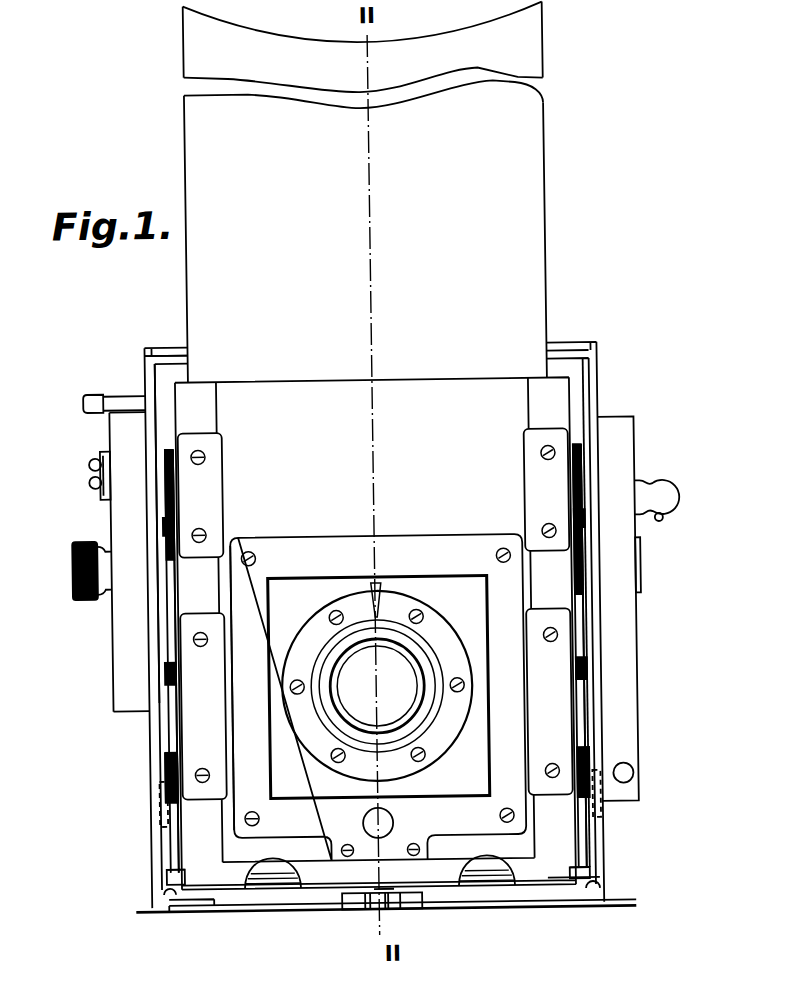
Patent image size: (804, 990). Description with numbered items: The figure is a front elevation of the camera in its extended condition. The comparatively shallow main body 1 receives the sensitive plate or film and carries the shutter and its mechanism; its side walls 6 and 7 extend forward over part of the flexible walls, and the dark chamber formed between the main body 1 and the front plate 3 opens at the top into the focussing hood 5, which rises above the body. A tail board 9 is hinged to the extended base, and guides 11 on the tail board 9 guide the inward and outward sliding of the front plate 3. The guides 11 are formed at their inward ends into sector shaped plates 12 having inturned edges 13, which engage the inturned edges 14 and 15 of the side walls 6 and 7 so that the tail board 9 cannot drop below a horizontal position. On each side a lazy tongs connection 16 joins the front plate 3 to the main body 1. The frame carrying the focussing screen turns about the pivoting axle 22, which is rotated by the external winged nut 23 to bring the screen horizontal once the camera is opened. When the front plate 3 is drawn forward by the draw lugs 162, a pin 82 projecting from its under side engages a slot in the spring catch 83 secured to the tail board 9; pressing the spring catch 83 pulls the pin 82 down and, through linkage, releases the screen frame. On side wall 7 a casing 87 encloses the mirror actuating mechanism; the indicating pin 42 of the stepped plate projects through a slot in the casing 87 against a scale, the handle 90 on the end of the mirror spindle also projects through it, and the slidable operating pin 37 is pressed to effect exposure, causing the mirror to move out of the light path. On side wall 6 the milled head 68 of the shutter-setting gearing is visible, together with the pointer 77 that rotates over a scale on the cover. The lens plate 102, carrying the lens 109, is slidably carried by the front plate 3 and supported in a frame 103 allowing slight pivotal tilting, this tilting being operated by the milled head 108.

The main body 1 is at (567, 345).
The front plate 3 is at (375, 633).
The focussing hood 5 is at (365, 192).
The side wall 6 is at (152, 370).
The side wall 7 is at (600, 448).
The tail board 9 is at (186, 915).
The guides 11 is at (161, 879).
The sector shaped plates 12 is at (162, 845).
The inturned edges 13 is at (154, 797).
The inturned edge 14 is at (161, 762).
The inturned edge 15 is at (596, 753).
The lazy tongs connection 16 is at (176, 629).
The pivoting axle 22 is at (131, 394).
The winged nut 23 is at (87, 400).
The operating pin 37 is at (630, 777).
The indicating pin 42 is at (643, 584).
The milled head 68 is at (74, 546).
The indicator or pointer 77 is at (95, 452).
The pin 82 is at (391, 904).
The spring catch 83 is at (366, 903).
The casing 87 is at (627, 644).
The handle 90 is at (664, 524).
The lens plate 102 is at (288, 597).
The frame 103 is at (318, 547).
The milled head 108 is at (364, 826).
The lens 109 is at (357, 633).
The draw lugs 162 is at (258, 875).